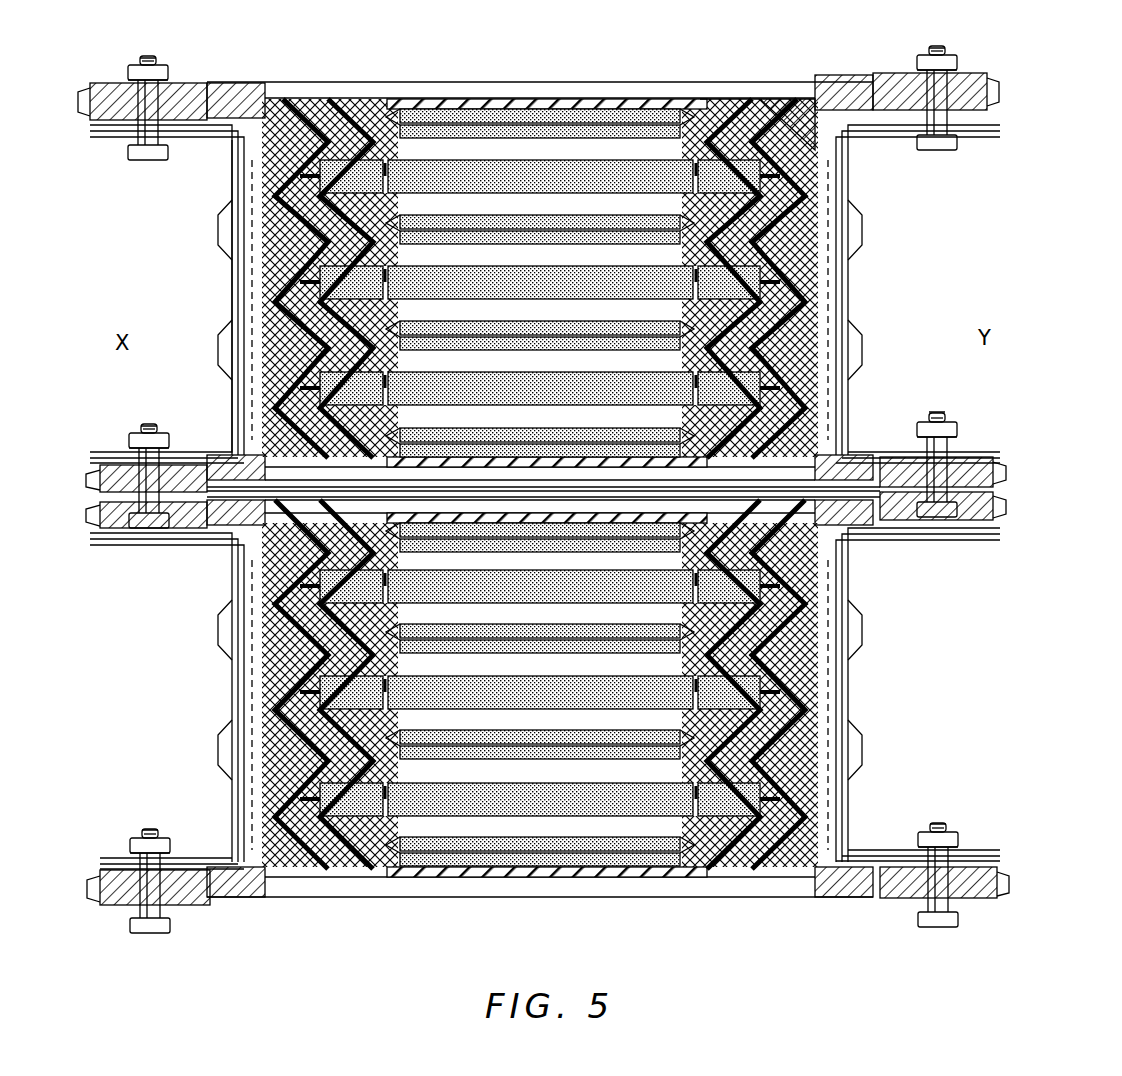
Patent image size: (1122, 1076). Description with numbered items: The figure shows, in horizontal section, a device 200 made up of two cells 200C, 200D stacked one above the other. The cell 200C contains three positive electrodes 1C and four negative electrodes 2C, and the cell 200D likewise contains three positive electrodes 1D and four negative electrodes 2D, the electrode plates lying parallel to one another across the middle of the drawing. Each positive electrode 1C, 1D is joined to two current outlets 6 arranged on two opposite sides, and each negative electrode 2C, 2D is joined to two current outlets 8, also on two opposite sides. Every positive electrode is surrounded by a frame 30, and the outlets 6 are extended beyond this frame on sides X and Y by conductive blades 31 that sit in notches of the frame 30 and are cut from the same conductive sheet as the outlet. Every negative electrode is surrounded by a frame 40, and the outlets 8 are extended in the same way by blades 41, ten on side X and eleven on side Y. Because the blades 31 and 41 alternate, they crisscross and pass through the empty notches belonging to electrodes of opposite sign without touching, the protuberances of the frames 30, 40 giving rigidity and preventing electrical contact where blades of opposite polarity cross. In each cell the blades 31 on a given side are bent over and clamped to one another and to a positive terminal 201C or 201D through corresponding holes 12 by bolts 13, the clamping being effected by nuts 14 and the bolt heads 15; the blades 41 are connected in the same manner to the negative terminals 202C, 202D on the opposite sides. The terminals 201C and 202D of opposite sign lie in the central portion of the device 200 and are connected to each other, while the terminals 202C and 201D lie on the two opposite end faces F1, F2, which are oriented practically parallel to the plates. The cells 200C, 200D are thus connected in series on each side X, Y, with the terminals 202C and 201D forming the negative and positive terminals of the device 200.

The positive electrode 1C is at (430, 162).
The negative electrode 2C is at (606, 160).
The positive electrode 1D is at (439, 575).
The negative electrode 2D is at (621, 552).
The current outlet 6 is at (386, 135).
The current outlet 8 is at (282, 122).
The hole 12 is at (906, 505).
The bolt 13 is at (152, 57).
The nut 14 is at (169, 70).
The bolt head 15 is at (153, 158).
The frame 30 is at (683, 151).
The conductive blade 31 is at (832, 240).
The frame 40 is at (752, 100).
The blade 41 is at (234, 291).
The device 200 is at (930, 262).
The cell 200C is at (914, 350).
The cell 200D is at (892, 640).
The positive terminal 201C is at (1014, 490).
The positive terminal 201D is at (122, 906).
The negative terminal 202C is at (130, 83).
The negative terminal 202D is at (84, 530).
The end face F1 is at (336, 82).
The end face F2 is at (341, 897).